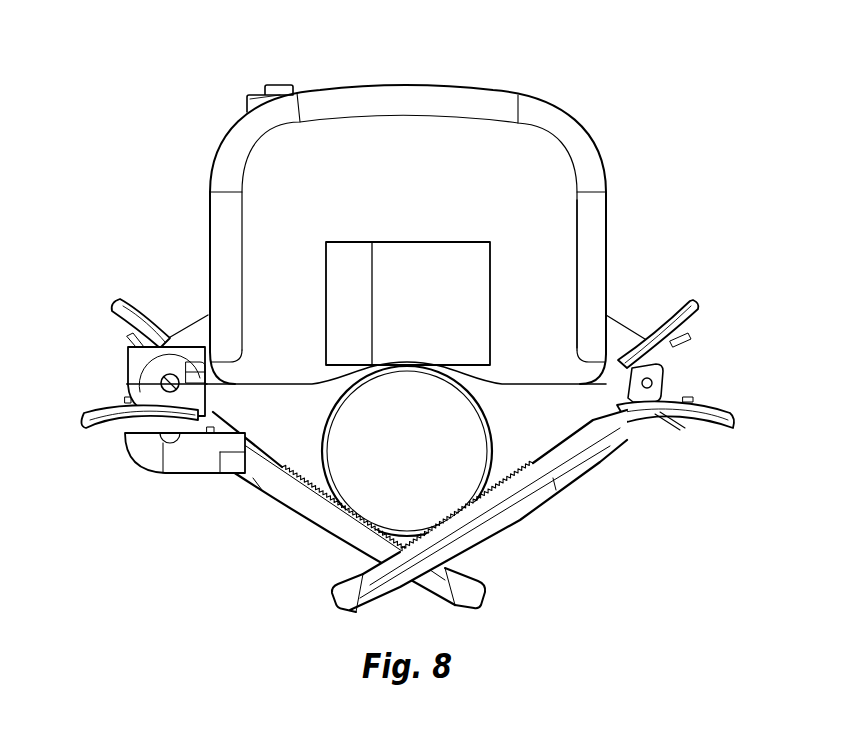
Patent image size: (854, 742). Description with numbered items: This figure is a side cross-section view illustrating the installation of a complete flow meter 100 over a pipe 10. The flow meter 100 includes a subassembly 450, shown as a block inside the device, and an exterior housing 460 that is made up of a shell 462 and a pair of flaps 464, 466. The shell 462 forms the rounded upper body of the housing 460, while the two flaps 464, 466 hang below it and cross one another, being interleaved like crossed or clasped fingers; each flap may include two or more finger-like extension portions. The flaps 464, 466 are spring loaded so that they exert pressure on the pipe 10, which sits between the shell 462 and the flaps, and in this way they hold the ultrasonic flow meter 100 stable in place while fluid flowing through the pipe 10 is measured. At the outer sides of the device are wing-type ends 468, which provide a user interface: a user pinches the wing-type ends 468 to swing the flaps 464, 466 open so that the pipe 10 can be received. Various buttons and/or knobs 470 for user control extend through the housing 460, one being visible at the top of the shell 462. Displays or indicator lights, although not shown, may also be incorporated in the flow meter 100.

The flow meter 100 is at (650, 105).
The exterior housing 460 is at (130, 198).
The shell 462 is at (592, 222).
The buttons and/or knobs 470 is at (243, 75).
The subassembly 450 is at (440, 232).
The pipe 10 is at (421, 466).
The flap 464 is at (327, 522).
The flap 466 is at (493, 520).
The wing-type ends 468 is at (102, 290).